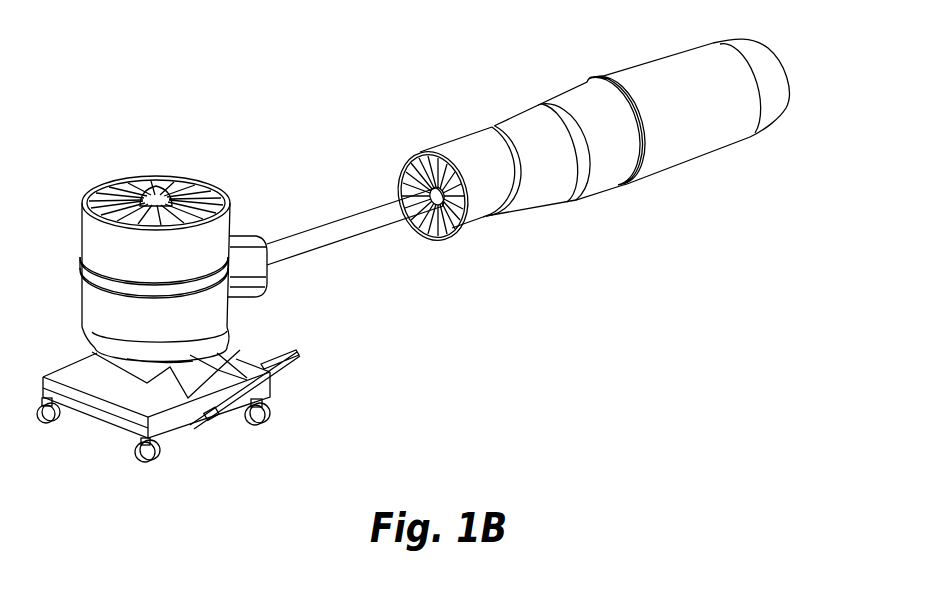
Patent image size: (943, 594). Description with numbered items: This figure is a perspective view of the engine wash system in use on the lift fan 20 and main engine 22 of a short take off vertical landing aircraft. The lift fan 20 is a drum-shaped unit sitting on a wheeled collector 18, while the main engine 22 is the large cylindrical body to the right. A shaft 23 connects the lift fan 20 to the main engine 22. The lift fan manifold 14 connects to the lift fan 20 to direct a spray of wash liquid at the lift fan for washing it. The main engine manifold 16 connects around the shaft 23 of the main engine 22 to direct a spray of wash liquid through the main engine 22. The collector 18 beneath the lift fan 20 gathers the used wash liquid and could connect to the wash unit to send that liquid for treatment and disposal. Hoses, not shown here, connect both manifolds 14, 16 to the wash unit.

The lift fan manifold 14 is at (188, 180).
The main engine manifold 16 is at (424, 230).
The collector 18 is at (219, 462).
The lift fan 20 is at (100, 168).
The main engine 22 is at (392, 150).
The shaft 23 is at (345, 244).